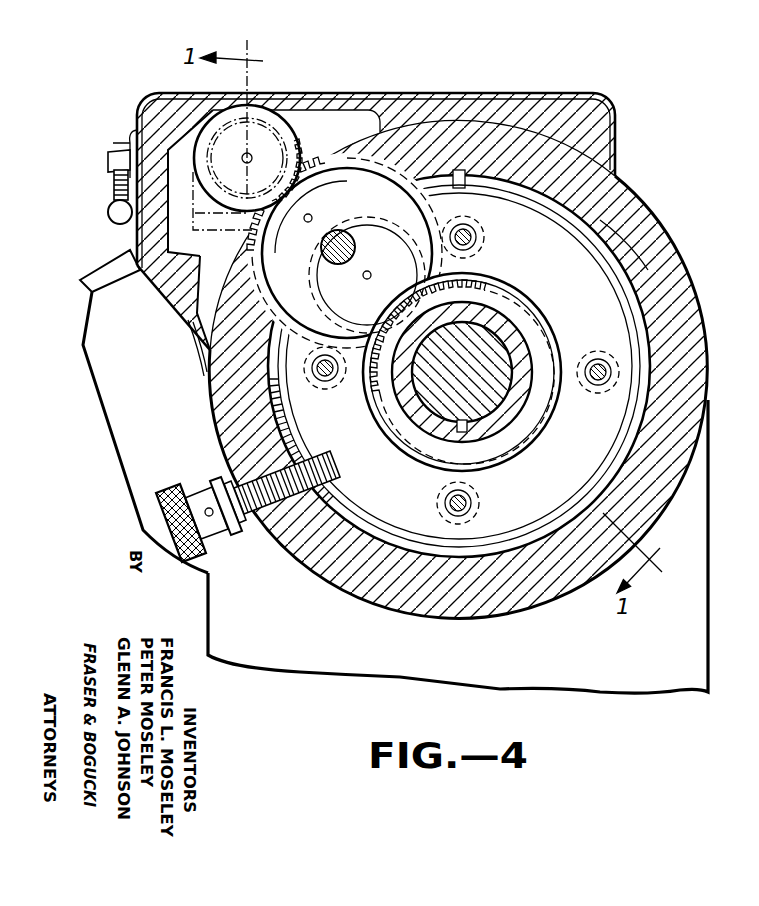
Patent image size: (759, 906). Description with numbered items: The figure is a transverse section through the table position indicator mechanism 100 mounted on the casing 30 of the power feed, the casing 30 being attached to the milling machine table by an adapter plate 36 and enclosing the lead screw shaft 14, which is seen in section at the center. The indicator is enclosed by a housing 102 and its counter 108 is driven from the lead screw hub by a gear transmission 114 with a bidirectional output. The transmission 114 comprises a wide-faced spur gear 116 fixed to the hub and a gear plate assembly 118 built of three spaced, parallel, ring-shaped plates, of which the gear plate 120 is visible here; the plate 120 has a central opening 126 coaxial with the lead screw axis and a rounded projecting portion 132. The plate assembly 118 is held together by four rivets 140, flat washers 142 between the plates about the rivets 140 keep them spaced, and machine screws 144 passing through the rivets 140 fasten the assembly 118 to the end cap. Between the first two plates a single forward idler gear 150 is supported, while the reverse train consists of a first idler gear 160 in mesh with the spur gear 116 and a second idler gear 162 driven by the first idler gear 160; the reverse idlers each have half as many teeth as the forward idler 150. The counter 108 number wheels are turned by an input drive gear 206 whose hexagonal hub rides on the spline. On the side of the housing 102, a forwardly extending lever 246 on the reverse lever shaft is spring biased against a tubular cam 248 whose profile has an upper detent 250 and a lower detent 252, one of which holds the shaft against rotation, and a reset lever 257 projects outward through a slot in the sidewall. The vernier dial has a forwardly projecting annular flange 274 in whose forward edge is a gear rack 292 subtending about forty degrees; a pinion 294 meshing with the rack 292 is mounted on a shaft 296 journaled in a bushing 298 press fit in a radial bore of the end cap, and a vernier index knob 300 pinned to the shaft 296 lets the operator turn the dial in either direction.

The lead screw shaft 14 is at (490, 404).
The casing 30 is at (218, 582).
The adapter plate 36 is at (107, 423).
The table position indicator mechanism 100 is at (372, 82).
The housing 102 is at (430, 90).
The counter 108 is at (284, 118).
The gear transmission 114 is at (258, 302).
The spur gear 116 is at (512, 302).
The gear plate assembly 118 is at (556, 271).
The gear plate 120 is at (618, 312).
The central opening 126 is at (551, 411).
The rounded projecting portion 132 is at (250, 278).
The rivet 140 is at (477, 237).
The flat washer 142 is at (479, 223).
The machine screw 144 is at (476, 250).
The forward idler gear 150 is at (433, 205).
The first idler gear 160 is at (366, 226).
The second idler gear 162 is at (330, 201).
The input drive gear 206 is at (275, 150).
The lever 246 is at (112, 212).
The tubular cam 248 is at (132, 143).
The upper detent 250 is at (110, 158).
The lower detent 252 is at (116, 186).
The reset lever 257 is at (112, 263).
The forwardly projecting annular flange 274 is at (648, 270).
The gear rack 292 is at (326, 491).
The pinion 294 is at (305, 456).
The shaft 296 is at (232, 488).
The bushing 298 is at (260, 510).
The vernier index knob 300 is at (188, 488).